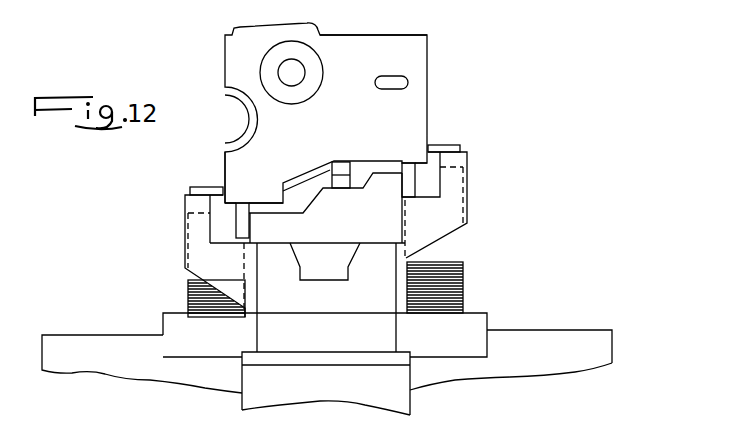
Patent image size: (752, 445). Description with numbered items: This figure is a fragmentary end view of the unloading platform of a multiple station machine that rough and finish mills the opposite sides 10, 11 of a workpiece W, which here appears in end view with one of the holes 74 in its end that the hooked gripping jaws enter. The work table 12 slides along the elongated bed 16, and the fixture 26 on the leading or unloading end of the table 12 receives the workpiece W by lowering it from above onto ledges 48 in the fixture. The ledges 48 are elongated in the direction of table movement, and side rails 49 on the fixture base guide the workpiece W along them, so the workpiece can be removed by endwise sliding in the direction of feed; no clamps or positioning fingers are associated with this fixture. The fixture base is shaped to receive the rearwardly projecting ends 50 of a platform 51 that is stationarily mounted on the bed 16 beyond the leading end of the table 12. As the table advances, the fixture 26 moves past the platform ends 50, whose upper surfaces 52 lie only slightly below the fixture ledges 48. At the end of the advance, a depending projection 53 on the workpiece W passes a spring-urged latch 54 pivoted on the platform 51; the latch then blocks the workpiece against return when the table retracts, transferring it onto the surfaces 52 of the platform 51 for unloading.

The side of the workpiece 10 is at (428, 72).
The workpiece W is at (380, 43).
The side of the workpiece 11 is at (222, 170).
The work table 12 is at (72, 343).
The bed 16 is at (250, 400).
The fixture 26 is at (190, 289).
The ledges 48 is at (226, 205).
The side rails 49 is at (188, 193).
The rearwardly projecting ends 50 is at (249, 222).
The platform 51 is at (395, 223).
The upper surfaces 52 is at (248, 205).
The depending projection 53 is at (314, 179).
The latch 54 is at (345, 166).
The holes 74 is at (306, 78).